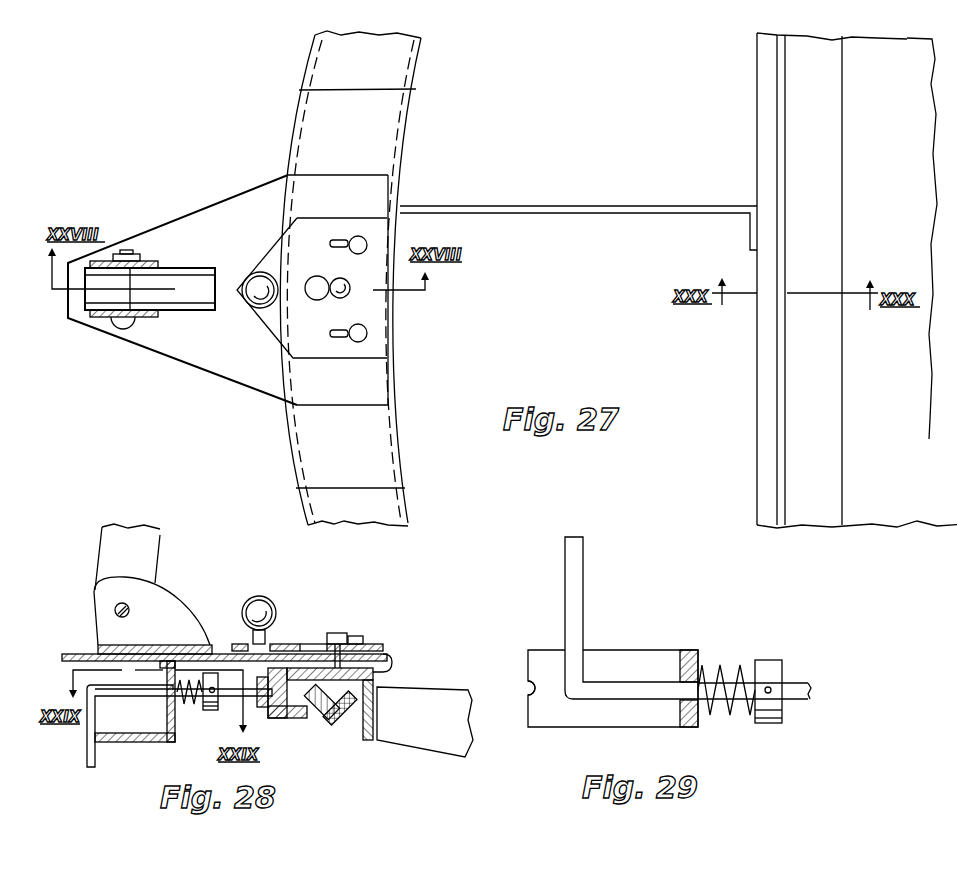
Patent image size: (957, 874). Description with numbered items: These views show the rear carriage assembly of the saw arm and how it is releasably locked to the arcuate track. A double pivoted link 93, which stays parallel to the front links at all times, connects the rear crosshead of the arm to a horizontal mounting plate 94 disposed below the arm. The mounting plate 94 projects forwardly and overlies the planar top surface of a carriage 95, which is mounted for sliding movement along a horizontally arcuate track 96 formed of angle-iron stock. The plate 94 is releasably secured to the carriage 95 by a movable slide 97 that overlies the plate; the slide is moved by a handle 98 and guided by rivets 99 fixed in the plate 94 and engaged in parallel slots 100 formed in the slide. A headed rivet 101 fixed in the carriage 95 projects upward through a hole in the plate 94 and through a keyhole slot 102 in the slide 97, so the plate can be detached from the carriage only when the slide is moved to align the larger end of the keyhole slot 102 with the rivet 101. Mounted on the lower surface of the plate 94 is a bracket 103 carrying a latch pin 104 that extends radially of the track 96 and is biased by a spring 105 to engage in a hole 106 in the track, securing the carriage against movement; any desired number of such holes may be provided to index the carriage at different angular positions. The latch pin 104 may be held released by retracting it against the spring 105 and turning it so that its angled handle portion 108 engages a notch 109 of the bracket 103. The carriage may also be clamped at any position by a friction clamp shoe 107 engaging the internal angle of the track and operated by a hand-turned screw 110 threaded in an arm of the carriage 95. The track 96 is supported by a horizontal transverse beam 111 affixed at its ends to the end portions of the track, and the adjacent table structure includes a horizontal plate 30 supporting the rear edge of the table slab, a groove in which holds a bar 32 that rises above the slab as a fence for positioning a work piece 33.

In FIG. 27, the horizontal plate 30 is at (785, 117).
In FIG. 27, the bar 32 is at (812, 40).
In FIG. 27, the work piece 33 is at (888, 42).
In FIG. 27, the double pivoted link 93 is at (151, 262).
In FIG. 28, the double pivoted link 93 is at (153, 553).
In FIG. 27, the mounting plate 94 is at (208, 363).
In FIG. 28, the mounting plate 94 is at (73, 653).
In FIG. 27, the carriage 95 is at (395, 125).
In FIG. 28, the carriage 95 is at (392, 664).
In FIG. 27, the arcuate track 96 is at (412, 62).
In FIG. 28, the arcuate track 96 is at (378, 705).
In FIG. 28, the slide 97 is at (384, 647).
In FIG. 27, the handle 98 is at (272, 277).
In FIG. 28, the handle 98 is at (262, 594).
In FIG. 27, the rivets 99 is at (360, 236).
In FIG. 28, the rivets 99 is at (363, 641).
In FIG. 27, the parallel slots 100 is at (338, 240).
In FIG. 27, the headed rivet 101 is at (346, 297).
In FIG. 28, the headed rivet 101 is at (338, 633).
In FIG. 27, the keyhole slot 102 is at (310, 298).
In FIG. 28, the keyhole slot 102 is at (310, 643).
In FIG. 28, the bracket 103 is at (142, 743).
In FIG. 29, the bracket 103 is at (576, 728).
In FIG. 28, the latch pin 104 is at (140, 697).
In FIG. 29, the latch pin 104 is at (636, 683).
In FIG. 28, the spring 105 is at (196, 705).
In FIG. 29, the spring 105 is at (760, 662).
In FIG. 28, the hole 106 is at (263, 712).
In FIG. 28, the friction clamp shoe 107 is at (307, 718).
In FIG. 28, the angled handle portion 108 is at (88, 732).
In FIG. 29, the angled handle portion 108 is at (578, 588).
In FIG. 29, the notch 109 is at (528, 690).
In FIG. 28, the hand-turned screw 110 is at (343, 718).
In FIG. 27, the transverse beam 111 is at (765, 157).